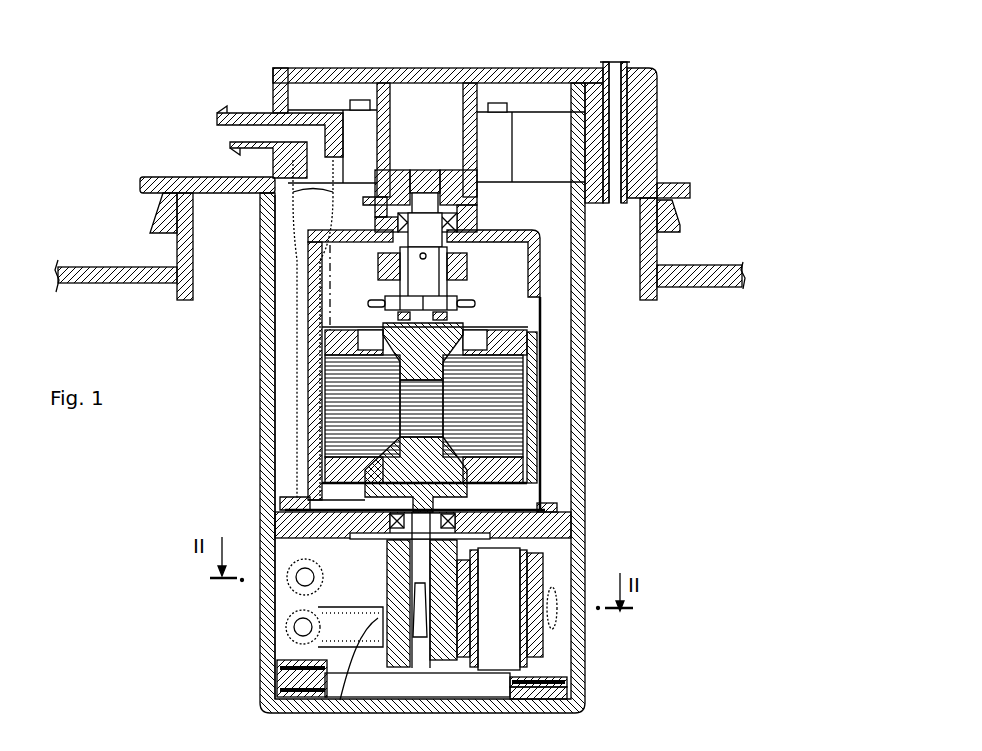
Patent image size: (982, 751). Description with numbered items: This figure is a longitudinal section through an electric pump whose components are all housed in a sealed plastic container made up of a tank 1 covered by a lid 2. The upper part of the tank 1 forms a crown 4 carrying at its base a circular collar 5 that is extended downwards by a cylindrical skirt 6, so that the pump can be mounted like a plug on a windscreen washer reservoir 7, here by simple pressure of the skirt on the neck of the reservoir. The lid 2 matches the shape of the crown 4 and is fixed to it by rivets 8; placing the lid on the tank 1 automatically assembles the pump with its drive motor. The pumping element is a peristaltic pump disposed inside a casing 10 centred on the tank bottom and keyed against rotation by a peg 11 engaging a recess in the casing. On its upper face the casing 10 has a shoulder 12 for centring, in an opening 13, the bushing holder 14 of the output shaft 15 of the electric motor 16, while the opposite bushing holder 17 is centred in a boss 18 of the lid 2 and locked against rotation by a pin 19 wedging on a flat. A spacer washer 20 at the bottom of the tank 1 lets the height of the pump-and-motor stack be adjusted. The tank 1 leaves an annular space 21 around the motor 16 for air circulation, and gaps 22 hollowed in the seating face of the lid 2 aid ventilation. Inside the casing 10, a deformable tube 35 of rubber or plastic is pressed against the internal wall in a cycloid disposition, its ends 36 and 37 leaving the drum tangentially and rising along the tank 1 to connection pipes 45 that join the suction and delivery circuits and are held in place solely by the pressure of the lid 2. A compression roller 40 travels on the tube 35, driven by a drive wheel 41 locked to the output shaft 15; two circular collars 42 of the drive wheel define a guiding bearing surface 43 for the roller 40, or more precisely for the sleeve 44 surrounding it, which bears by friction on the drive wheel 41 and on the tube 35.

The tank 1 is at (267, 380).
The lid 2 is at (500, 72).
The crown 4 is at (650, 130).
The circular collar 5 is at (685, 185).
The cylindrical skirt 6 is at (655, 245).
The windscreen washer reservoir 7 is at (93, 272).
The rivet 8 is at (616, 90).
The casing 10 is at (555, 537).
The peg 11 is at (283, 680).
The shoulder 12 is at (293, 500).
The opening 13 is at (557, 512).
The bushing holder 14 is at (440, 497).
The output shaft 15 is at (563, 673).
The electric motor 16 is at (545, 367).
The opposite bushing holder 17 is at (380, 218).
The boss 18 is at (378, 200).
The pin 19 is at (465, 220).
The spacer washer 20 is at (550, 690).
The annular space 21 is at (280, 333).
The gaps 22 is at (360, 102).
The deformable tube 35 is at (555, 625).
The end of deformable tube 36 is at (290, 633).
The end of deformable tube 37 is at (307, 213).
The compression roller 40 is at (498, 663).
The drive wheel 41 is at (445, 660).
The circular collars 42 is at (380, 554).
The guiding bearing surface 43 is at (373, 640).
The sleeve 44 is at (540, 635).
The connection pipes 45 is at (235, 130).